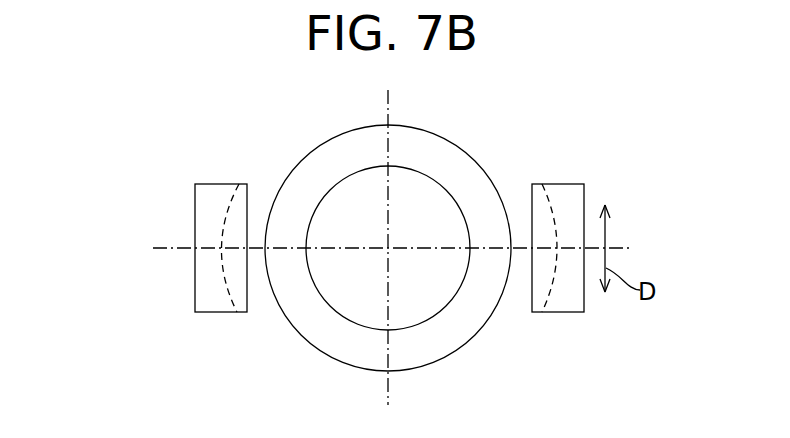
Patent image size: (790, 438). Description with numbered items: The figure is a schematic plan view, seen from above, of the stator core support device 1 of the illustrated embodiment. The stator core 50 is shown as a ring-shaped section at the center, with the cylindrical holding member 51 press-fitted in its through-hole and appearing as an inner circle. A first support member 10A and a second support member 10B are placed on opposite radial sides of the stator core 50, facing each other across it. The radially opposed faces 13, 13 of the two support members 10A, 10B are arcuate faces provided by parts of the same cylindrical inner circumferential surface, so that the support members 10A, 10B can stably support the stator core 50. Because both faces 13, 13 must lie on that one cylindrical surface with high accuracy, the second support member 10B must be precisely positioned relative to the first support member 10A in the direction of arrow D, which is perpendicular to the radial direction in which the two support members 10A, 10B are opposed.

The stator core support device 1 is at (172, 187).
The first support member 10A is at (213, 184).
The second support member 10B is at (565, 184).
The radially opposed face 13 is at (240, 283).
The stator core 50 is at (441, 157).
The holding member 51 is at (357, 198).